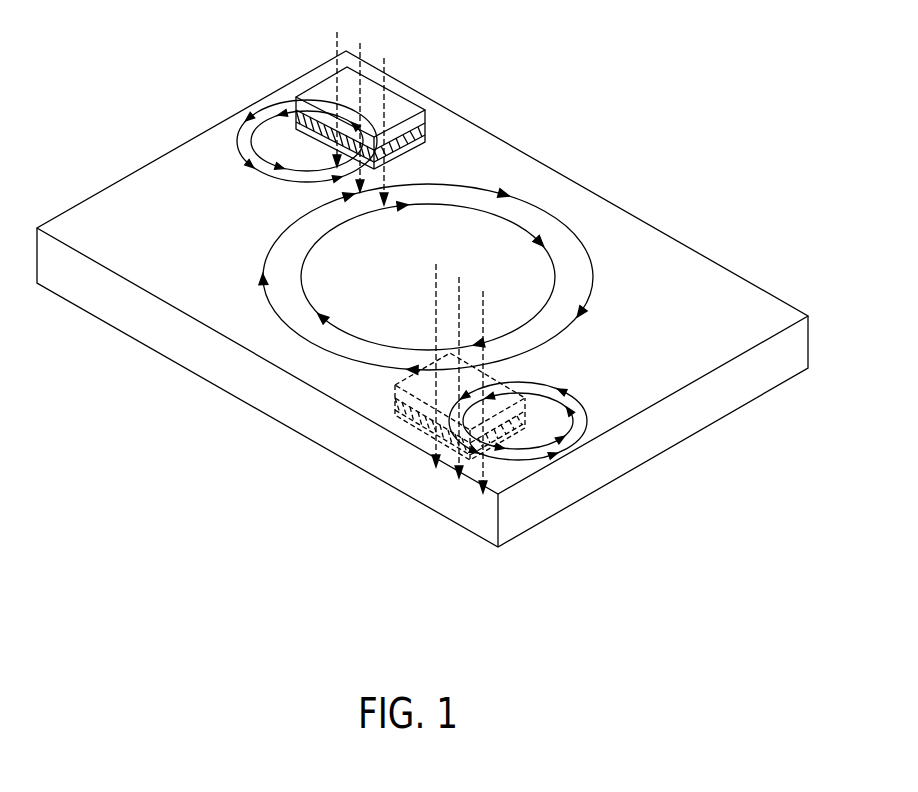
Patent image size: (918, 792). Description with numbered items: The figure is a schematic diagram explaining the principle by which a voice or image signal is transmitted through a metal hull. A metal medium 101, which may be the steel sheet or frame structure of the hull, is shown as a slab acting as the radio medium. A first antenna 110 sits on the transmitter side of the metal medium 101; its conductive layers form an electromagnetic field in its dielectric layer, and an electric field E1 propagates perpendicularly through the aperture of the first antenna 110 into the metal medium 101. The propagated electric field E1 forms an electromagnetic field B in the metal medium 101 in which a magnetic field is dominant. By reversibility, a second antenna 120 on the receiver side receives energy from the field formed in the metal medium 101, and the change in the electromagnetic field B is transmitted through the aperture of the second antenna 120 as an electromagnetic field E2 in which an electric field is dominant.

The metal medium 101 is at (583, 187).
The first antenna 110 is at (402, 108).
The second antenna 120 is at (415, 423).
The electromagnetic field B is at (426, 279).
The electric field E1 is at (360, 106).
The electromagnetic field E2 is at (459, 391).